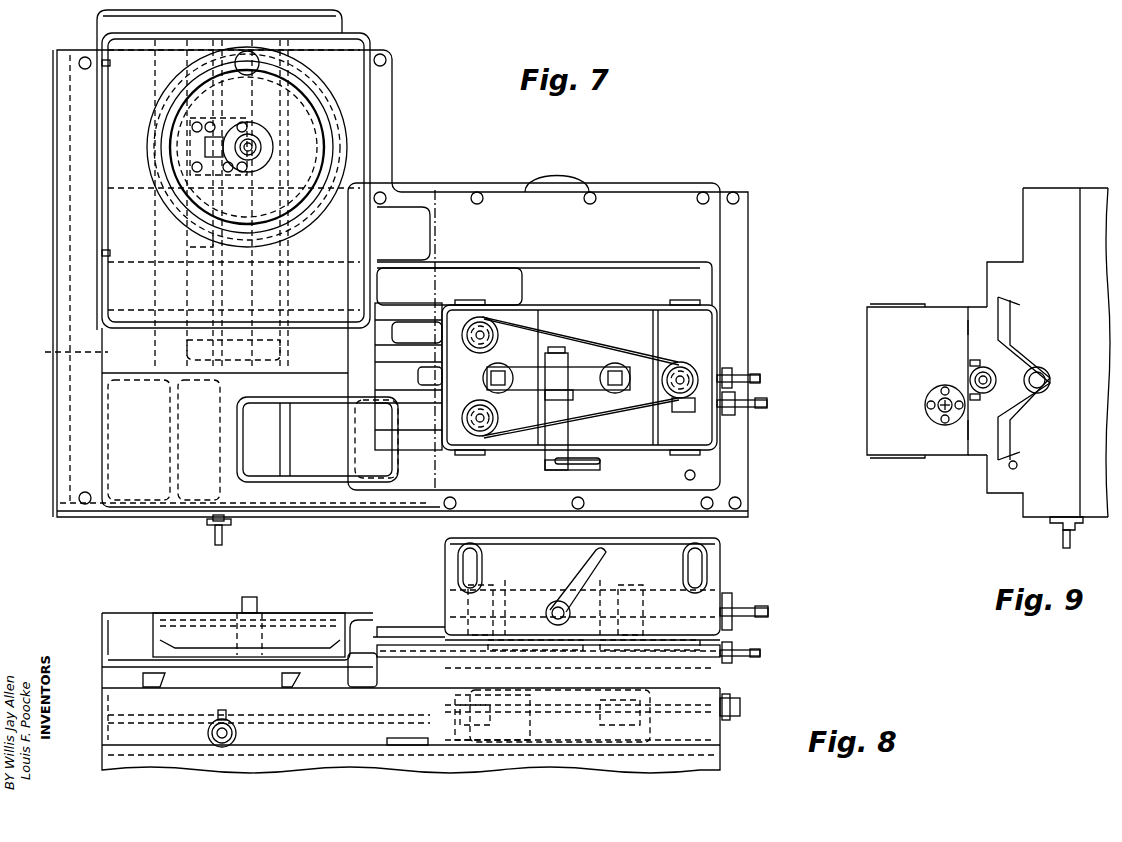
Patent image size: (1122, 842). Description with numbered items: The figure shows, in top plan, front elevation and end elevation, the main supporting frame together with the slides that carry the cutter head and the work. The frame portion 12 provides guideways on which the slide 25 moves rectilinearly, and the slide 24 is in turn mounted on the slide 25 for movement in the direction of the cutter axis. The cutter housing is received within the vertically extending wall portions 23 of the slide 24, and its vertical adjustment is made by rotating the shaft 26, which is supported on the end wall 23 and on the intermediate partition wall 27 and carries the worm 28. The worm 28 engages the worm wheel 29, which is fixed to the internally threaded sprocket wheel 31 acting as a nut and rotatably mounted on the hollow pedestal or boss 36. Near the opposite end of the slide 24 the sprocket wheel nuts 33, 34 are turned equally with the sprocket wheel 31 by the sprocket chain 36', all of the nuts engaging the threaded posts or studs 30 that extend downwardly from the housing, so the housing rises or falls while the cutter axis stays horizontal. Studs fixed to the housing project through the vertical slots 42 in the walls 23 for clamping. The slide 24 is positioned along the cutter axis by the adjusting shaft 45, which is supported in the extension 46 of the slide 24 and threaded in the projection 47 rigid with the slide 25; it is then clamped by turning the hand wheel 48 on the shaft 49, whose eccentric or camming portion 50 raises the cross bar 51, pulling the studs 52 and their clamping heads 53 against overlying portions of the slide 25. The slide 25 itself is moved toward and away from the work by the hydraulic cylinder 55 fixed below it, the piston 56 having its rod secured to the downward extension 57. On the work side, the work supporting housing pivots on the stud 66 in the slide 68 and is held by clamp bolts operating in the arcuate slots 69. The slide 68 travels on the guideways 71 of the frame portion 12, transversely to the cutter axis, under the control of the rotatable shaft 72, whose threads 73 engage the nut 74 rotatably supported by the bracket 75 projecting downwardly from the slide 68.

In FIG. 7, the frame portion 12 is at (400, 283).
In FIG. 8, the frame portion 12 is at (722, 760).
In FIG. 9, the frame portion 12 is at (1050, 196).
In FIG. 7, the vertically extending wall portions 23 is at (640, 300).
In FIG. 8, the vertically extending wall portions 23 is at (715, 595).
In FIG. 9, the vertically extending wall portions 23 is at (952, 307).
In FIG. 8, the slide 24 is at (735, 628).
In FIG. 9, the slide 24 is at (897, 307).
In FIG. 9, the slide 25 is at (987, 440).
In FIG. 7, the shaft 26 is at (766, 410).
In FIG. 8, the shaft 26 is at (745, 605).
In FIG. 9, the shaft 26 is at (943, 412).
In FIG. 7, the intermediate partition wall 27 is at (650, 426).
In FIG. 7, the worm 28 is at (683, 412).
In FIG. 9, the worm 28 is at (1020, 463).
In FIG. 7, the worm wheel 29 is at (690, 372).
In FIG. 7, the threaded posts or studs 30 is at (695, 376).
In FIG. 7, the sprocket wheel 31 is at (677, 365).
In FIG. 7, the sprocket wheel nut 33 is at (496, 340).
In FIG. 7, the sprocket wheel nut 34 is at (496, 414).
In FIG. 8, the hollow pedestal or boss 36 is at (546, 641).
In FIG. 7, the sprocket chain 36' is at (579, 377).
In FIG. 8, the vertical slots 42 is at (458, 568).
In FIG. 7, the adjusting shaft 45 is at (765, 378).
In FIG. 8, the adjusting shaft 45 is at (745, 656).
In FIG. 9, the adjusting shaft 45 is at (983, 372).
In FIG. 9, the extension 46 is at (972, 372).
In FIG. 8, the projection 47 is at (580, 665).
In FIG. 8, the hand wheel 48 is at (598, 558).
In FIG. 7, the shaft 49 is at (560, 435).
In FIG. 8, the eccentric or camming portion 50 is at (552, 600).
In FIG. 7, the cross bar 51 is at (583, 365).
In FIG. 7, the studs 52 is at (613, 388).
In FIG. 8, the studs 52 is at (515, 588).
In FIG. 8, the clamping heads 53 is at (510, 640).
In FIG. 8, the hydraulic cylinder 55 is at (560, 745).
In FIG. 8, the piston 56 is at (515, 740).
In FIG. 8, the downward extension 57 is at (725, 725).
In FIG. 9, the downward extension 57 is at (1032, 368).
In FIG. 8, the stud 66 is at (258, 600).
In FIG. 7, the slide 68 is at (155, 362).
In FIG. 8, the slide 68 is at (102, 680).
In FIG. 7, the arcuate slots 69 is at (330, 128).
In FIG. 8, the arcuate slots 69 is at (158, 613).
In FIG. 7, the guideways 71 is at (63, 355).
In FIG. 8, the guideways 71 is at (165, 675).
In FIG. 7, the rotatable shaft 72 is at (235, 537).
In FIG. 8, the rotatable shaft 72 is at (230, 725).
In FIG. 7, the threads 73 is at (188, 245).
In FIG. 7, the nut 74 is at (190, 150).
In FIG. 7, the bracket 75 is at (232, 118).